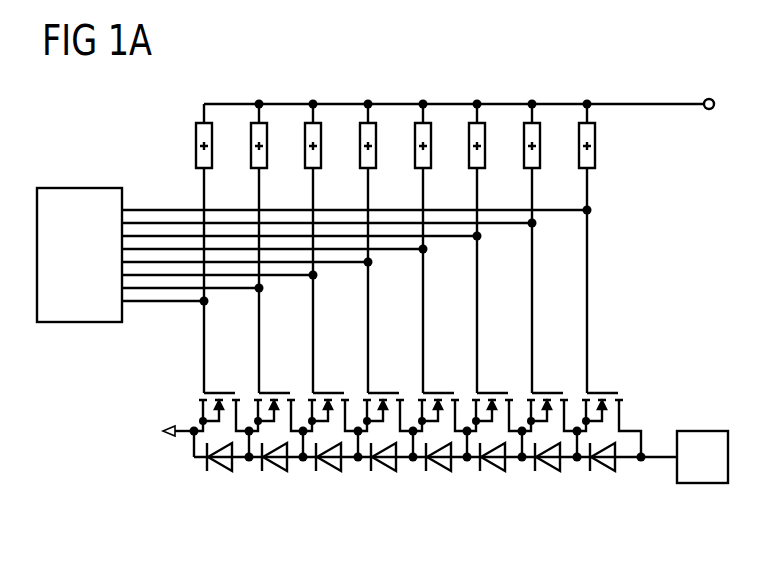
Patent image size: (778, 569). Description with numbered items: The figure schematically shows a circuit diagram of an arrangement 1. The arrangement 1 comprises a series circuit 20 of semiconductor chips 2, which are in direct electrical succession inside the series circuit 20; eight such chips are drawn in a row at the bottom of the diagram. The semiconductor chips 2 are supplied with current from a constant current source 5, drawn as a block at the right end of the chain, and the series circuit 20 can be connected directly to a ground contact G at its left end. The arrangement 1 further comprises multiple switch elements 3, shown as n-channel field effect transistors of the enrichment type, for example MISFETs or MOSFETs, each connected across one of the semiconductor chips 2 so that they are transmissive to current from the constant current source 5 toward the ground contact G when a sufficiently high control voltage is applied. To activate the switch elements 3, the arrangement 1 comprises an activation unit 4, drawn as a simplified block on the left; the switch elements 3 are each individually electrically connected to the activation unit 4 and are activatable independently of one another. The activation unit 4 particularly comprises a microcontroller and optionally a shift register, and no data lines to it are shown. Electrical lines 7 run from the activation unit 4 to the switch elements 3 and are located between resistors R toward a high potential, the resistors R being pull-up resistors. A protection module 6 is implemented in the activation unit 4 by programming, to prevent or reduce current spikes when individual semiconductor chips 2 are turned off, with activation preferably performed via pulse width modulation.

The arrangement 1 is at (688, 70).
The semiconductor chip 2 is at (600, 470).
The switch element 3 is at (602, 392).
The activation unit 4 is at (79, 223).
The protection module 6 is at (80, 188).
The constant current source 5 is at (701, 431).
The electrical line 7 is at (588, 284).
The series circuit 20 is at (615, 503).
The resistor R is at (596, 145).
The ground contact G is at (174, 427).